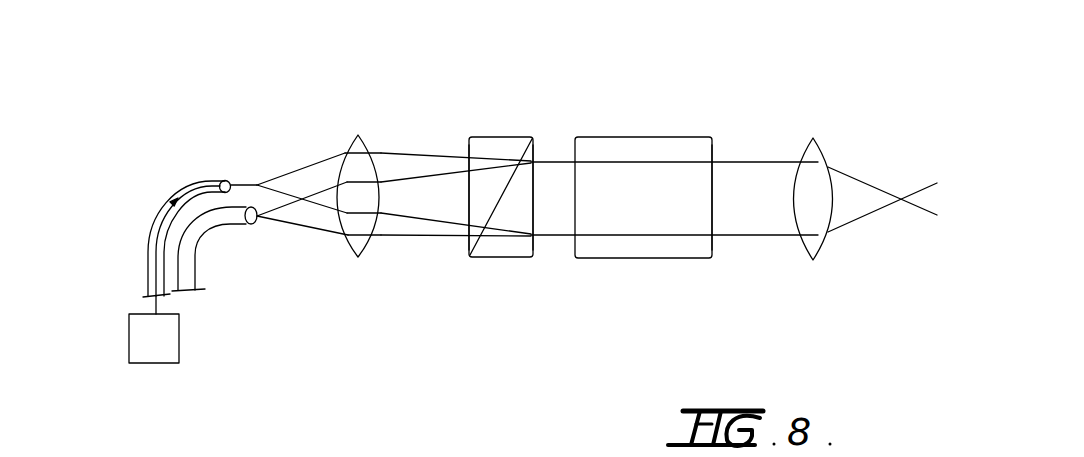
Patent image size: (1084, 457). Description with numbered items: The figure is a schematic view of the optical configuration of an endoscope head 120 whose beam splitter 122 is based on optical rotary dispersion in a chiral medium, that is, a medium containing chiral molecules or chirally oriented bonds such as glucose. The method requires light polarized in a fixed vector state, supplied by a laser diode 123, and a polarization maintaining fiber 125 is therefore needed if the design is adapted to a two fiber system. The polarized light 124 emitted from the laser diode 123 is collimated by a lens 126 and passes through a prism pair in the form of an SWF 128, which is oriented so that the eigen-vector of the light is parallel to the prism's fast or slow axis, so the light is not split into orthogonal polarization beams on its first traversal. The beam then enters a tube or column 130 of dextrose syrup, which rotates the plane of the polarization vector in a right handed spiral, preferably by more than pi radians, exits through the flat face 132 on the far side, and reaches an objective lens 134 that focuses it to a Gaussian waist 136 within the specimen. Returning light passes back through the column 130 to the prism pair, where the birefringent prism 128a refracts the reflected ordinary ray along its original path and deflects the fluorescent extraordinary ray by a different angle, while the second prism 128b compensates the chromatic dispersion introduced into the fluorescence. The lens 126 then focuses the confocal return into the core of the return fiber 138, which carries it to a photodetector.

The endoscope head 120 is at (313, 130).
The beam splitter 122 is at (660, 286).
The laser diode 123 is at (129, 340).
The polarized light 124 is at (202, 181).
The polarization maintaining fiber 125 is at (153, 211).
The lens 126 is at (358, 257).
The SWF 128 is at (507, 137).
The prism 128a is at (535, 257).
The second prism 128b is at (467, 253).
The tube or column 130 is at (612, 259).
The flat face 132 is at (712, 182).
The objective lens 134 is at (807, 250).
The Gaussian waist 136 is at (897, 200).
The return fiber 138 is at (198, 273).